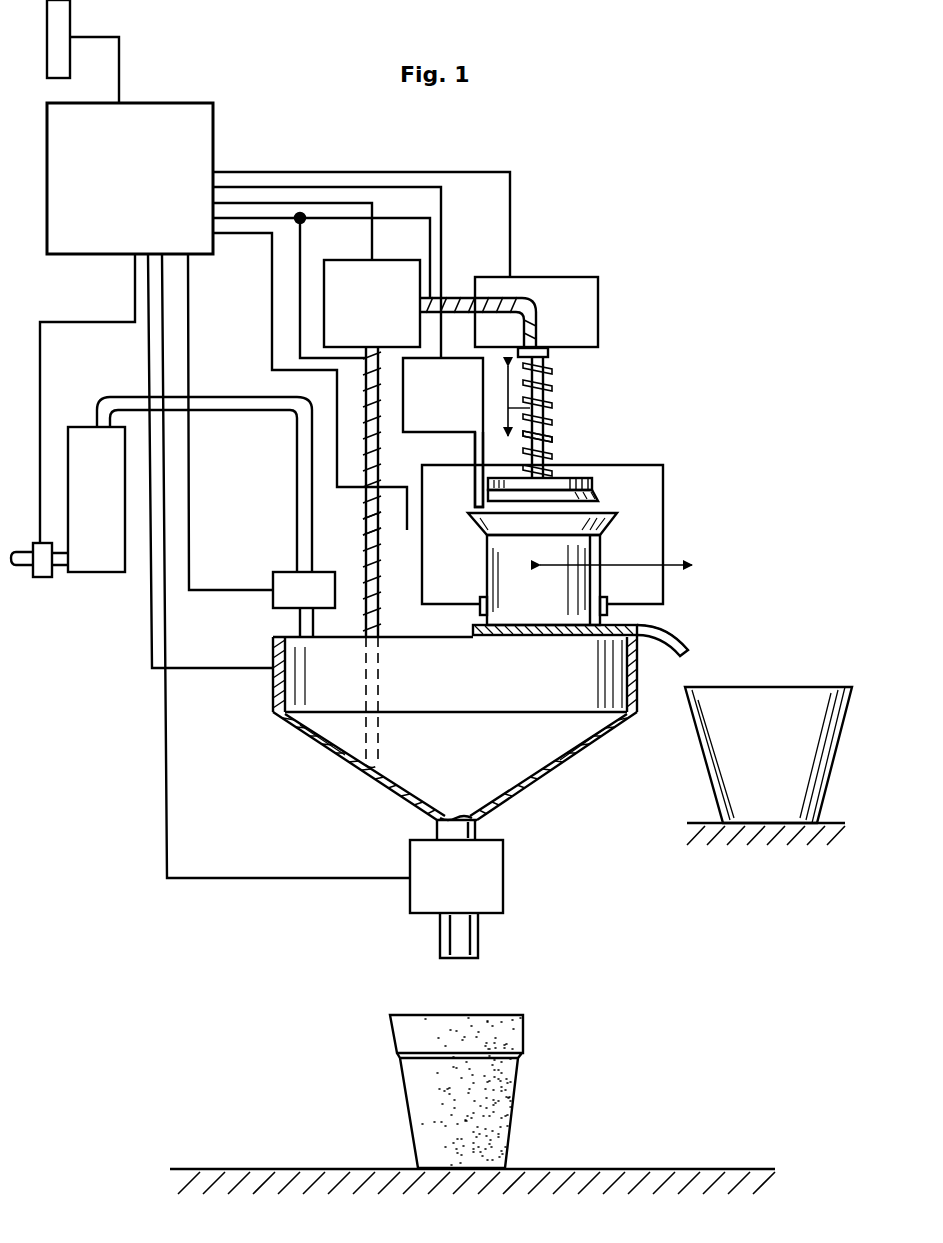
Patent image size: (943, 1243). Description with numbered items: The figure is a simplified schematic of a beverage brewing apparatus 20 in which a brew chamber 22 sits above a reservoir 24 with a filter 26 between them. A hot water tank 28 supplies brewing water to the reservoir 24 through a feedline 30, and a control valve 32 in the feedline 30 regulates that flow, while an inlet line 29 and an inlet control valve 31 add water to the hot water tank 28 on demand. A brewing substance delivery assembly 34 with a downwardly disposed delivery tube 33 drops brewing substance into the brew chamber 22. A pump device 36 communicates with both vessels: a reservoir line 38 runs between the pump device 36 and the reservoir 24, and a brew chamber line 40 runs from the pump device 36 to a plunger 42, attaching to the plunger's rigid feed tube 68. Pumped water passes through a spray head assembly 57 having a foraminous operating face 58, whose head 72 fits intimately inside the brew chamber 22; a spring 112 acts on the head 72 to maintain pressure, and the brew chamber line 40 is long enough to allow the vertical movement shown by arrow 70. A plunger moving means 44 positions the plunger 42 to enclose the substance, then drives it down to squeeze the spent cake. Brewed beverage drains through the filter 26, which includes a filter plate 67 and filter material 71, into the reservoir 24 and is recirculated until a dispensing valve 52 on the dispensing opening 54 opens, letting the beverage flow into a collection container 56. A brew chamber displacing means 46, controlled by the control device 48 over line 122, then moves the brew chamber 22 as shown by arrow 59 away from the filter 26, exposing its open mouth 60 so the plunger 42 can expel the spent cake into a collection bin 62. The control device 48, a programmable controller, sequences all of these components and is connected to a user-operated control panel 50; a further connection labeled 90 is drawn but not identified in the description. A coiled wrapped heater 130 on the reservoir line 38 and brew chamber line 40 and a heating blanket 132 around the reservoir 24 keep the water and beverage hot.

The beverage brewing apparatus 20 is at (607, 193).
The brew chamber 22 is at (606, 541).
The reservoir 24 is at (424, 727).
The filter 26 is at (688, 627).
The hot water tank 28 is at (95, 562).
The inlet line 29 is at (25, 566).
The feedline 30 is at (108, 397).
The inlet control valve 31 is at (45, 578).
The control valve 32 is at (287, 572).
The delivery tube 33 is at (474, 490).
The brewing substance delivery assembly 34 is at (420, 433).
The pump device 36 is at (397, 256).
The reservoir line 38 is at (368, 548).
The brew chamber line 40 is at (460, 297).
The plunger 42 is at (614, 456).
The plunger moving means 44 is at (598, 303).
The brew chamber displacing means 46 is at (664, 519).
The control device 48 is at (183, 103).
The control panel 50 is at (72, 10).
The dispensing valve 52 is at (503, 873).
The dispensing opening 54 is at (478, 823).
The collection container 56 is at (413, 1085).
The spray head assembly 57 is at (605, 486).
The foraminous operating face 58 is at (606, 503).
The arrow 59 is at (640, 565).
The open mouth 60 is at (572, 636).
The collection bin 62 is at (822, 773).
The filter plate 67 is at (650, 626).
The feed tube 68 is at (547, 372).
The arrow 70 is at (553, 413).
The filter material 71 is at (512, 636).
The head 72 is at (568, 487).
The control line 90 is at (510, 216).
The spring 112 is at (553, 405).
The line 122 is at (407, 530).
The coiled wrapped heater 130 is at (370, 524).
The heating blanket 132 is at (273, 697).